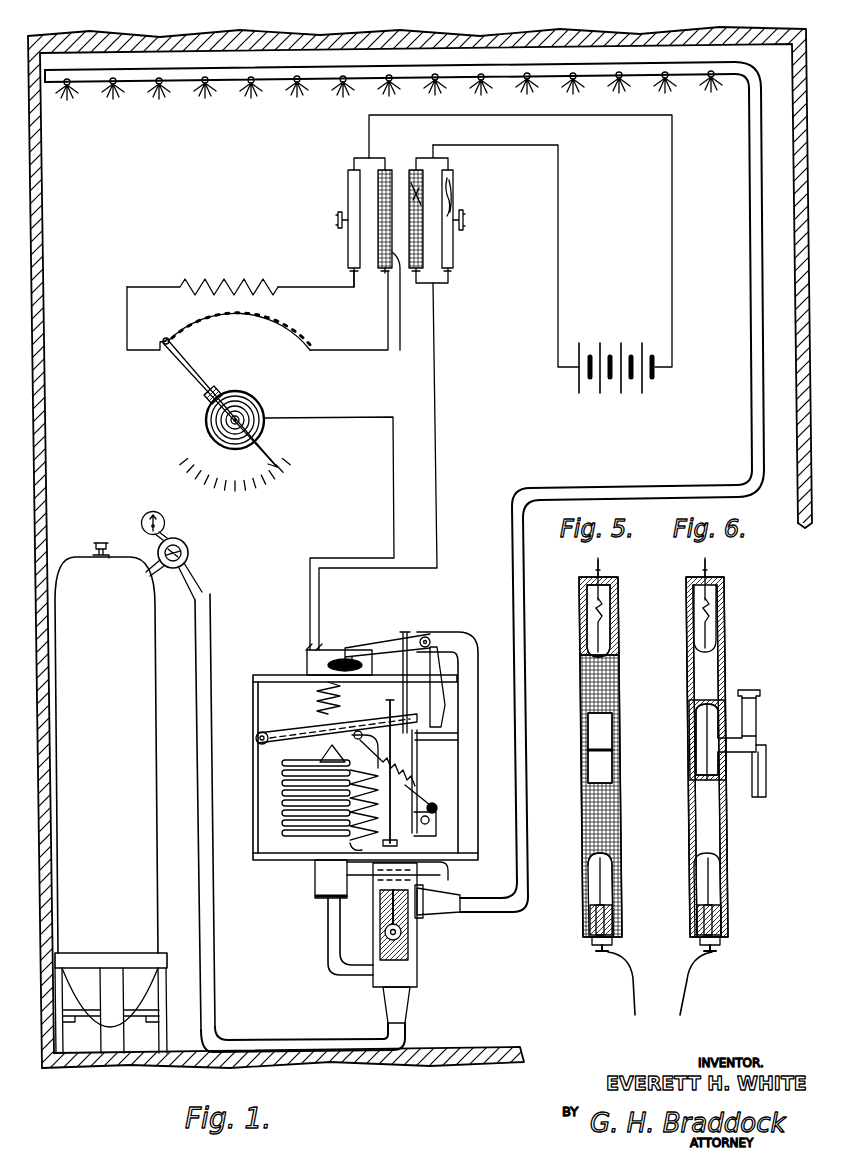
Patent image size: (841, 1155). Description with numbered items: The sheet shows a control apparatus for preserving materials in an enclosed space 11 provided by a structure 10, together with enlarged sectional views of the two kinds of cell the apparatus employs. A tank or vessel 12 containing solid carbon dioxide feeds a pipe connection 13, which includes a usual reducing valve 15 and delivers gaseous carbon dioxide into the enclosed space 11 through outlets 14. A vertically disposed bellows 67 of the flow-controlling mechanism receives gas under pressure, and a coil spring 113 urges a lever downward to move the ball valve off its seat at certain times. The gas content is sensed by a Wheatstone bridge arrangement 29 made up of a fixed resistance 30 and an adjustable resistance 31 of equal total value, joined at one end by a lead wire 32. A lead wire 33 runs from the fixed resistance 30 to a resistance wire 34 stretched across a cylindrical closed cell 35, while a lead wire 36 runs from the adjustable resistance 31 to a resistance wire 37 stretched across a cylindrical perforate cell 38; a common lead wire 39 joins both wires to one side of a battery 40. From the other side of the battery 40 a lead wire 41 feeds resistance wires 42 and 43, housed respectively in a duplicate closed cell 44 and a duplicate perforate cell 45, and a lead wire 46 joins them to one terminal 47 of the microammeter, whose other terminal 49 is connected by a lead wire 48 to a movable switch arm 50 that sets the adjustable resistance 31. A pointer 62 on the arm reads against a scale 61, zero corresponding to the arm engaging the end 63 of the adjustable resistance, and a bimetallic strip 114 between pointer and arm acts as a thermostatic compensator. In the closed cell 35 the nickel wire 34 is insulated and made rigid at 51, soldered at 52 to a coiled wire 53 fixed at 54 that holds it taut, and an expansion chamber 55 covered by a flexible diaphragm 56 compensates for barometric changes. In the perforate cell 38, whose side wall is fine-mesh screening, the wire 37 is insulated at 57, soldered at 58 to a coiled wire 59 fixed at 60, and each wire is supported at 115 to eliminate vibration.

In FIG. 1, the structure 10 is at (789, 494).
In FIG. 1, the enclosed space 11 is at (478, 1012).
In FIG. 1, the tank or vessel 12 is at (148, 772).
In FIG. 1, the pipe connection 13 is at (528, 832).
In FIG. 1, the outlets 14 is at (336, 78).
In FIG. 1, the reducing valve 15 is at (191, 554).
In FIG. 1, the Wheatstone bridge arrangement 29 is at (201, 235).
In FIG. 1, the fixed resistance 30 is at (245, 285).
In FIG. 1, the adjustable resistance 31 is at (278, 330).
In FIG. 1, the lead wire 32 is at (125, 305).
In FIG. 1, the lead wire 33 is at (318, 286).
In FIG. 6, the lead wire 33 is at (693, 968).
In FIG. 6, the resistance wire 34 is at (717, 633).
In FIG. 1, the cylindrical closed cell 35 is at (355, 195).
In FIG. 6, the cylindrical closed cell 35 is at (722, 672).
In FIG. 1, the lead wire 36 is at (368, 351).
In FIG. 5, the lead wire 36 is at (626, 975).
In FIG. 5, the resistance wire 37 is at (610, 628).
In FIG. 1, the cylindrical perforate cell 38 is at (401, 300).
In FIG. 5, the cylindrical perforate cell 38 is at (620, 690).
In FIG. 1, the lead wire 39 is at (604, 114).
In FIG. 5, the lead wire 39 is at (602, 568).
In FIG. 6, the lead wire 39 is at (710, 570).
In FIG. 1, the battery 40 is at (610, 356).
In FIG. 1, the lead wire 41 is at (558, 246).
In FIG. 1, the resistance wire 42 is at (450, 190).
In FIG. 1, the resistance wire 43 is at (411, 193).
In FIG. 1, the cylindrical cell 44 is at (455, 248).
In FIG. 1, the cylindrical cell 45 is at (425, 252).
In FIG. 1, the lead wire 46 is at (440, 423).
In FIG. 1, the terminal 47 is at (322, 648).
In FIG. 1, the lead wire 48 is at (392, 520).
In FIG. 1, the terminal 49 is at (310, 648).
In FIG. 1, the movable switch arm 50 is at (200, 382).
In FIG. 6, the insulation 51 is at (728, 915).
In FIG. 6, the solder joint 52 is at (712, 618).
In FIG. 6, the coiled wire 53 is at (712, 604).
In FIG. 6, the fixing point 54 is at (704, 578).
In FIG. 6, the expansion chamber 55 is at (740, 790).
In FIG. 6, the flexible diaphragm 56 is at (762, 720).
In FIG. 5, the insulation 57 is at (620, 915).
In FIG. 5, the solder joint 58 is at (606, 618).
In FIG. 5, the coiled wire 59 is at (605, 604).
In FIG. 5, the fixing point 60 is at (596, 578).
In FIG. 1, the scale 61 is at (254, 500).
In FIG. 1, the pointer 62 is at (268, 455).
In FIG. 1, the end of adjustable resistance 63 is at (160, 352).
In FIG. 1, the bellows 67 is at (282, 806).
In FIG. 1, the coil spring 113 is at (342, 698).
In FIG. 1, the bimetallic strip 114 is at (208, 431).
In FIG. 5, the support 115 is at (612, 742).
In FIG. 6, the support 115 is at (690, 726).